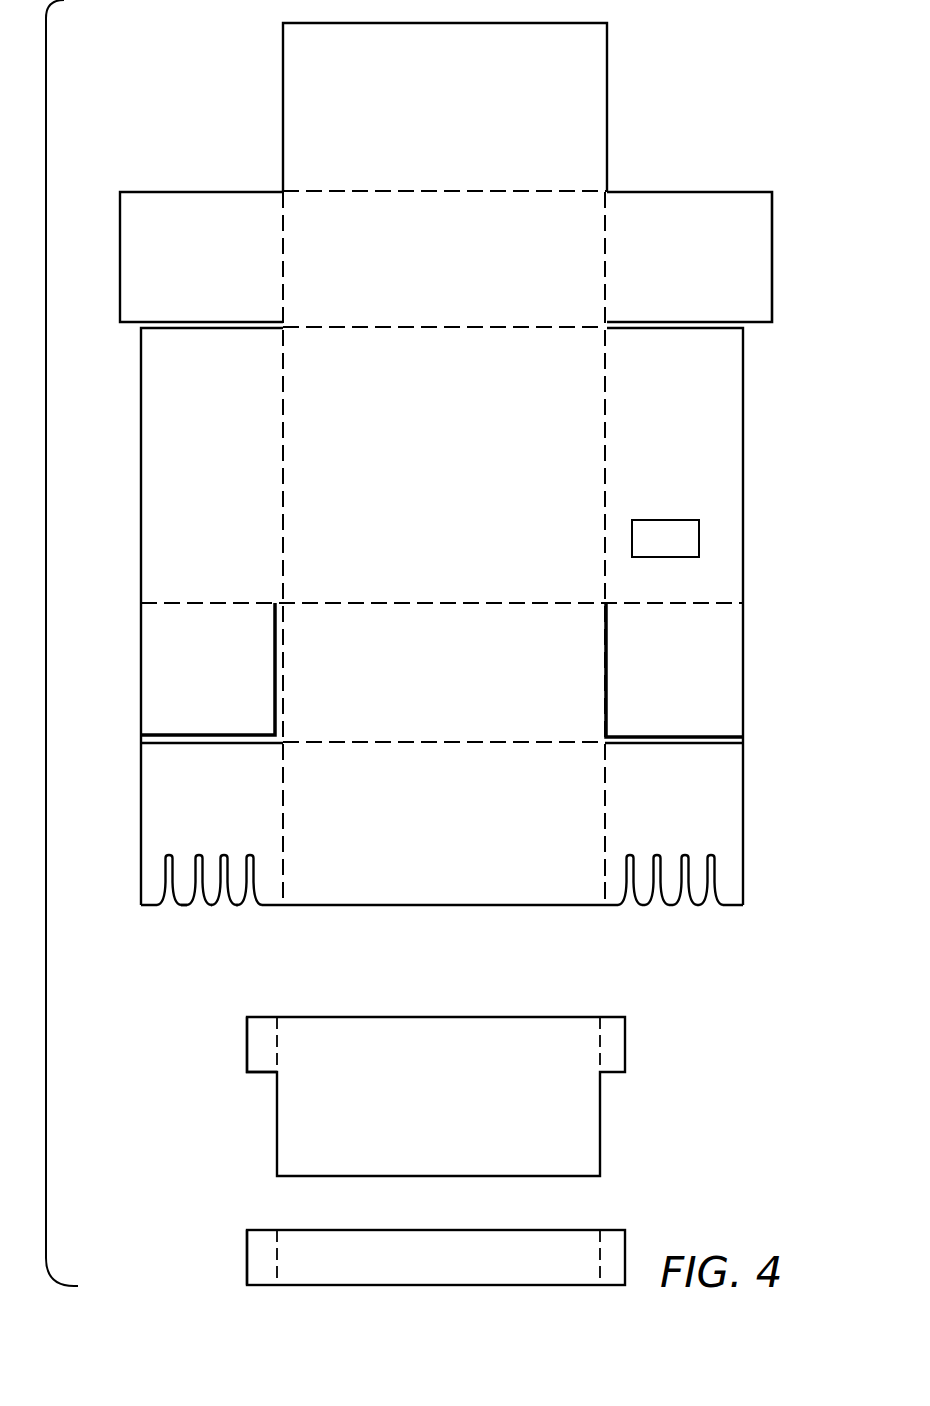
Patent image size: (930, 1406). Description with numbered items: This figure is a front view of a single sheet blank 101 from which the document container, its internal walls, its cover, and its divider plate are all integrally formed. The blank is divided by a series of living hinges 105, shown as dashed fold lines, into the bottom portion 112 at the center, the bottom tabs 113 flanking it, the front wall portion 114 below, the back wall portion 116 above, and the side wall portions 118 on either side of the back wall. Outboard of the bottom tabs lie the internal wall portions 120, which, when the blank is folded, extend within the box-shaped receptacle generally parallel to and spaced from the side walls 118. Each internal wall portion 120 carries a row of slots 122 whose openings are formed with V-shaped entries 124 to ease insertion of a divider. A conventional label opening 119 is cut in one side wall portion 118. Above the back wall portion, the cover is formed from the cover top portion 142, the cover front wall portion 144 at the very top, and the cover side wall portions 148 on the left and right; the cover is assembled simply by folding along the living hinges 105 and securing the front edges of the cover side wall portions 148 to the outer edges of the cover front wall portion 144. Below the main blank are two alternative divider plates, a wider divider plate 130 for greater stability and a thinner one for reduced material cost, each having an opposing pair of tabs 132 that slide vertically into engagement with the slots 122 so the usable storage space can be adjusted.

The single sheet blank 101 is at (690, 92).
The living hinges 105 is at (601, 878).
The bottom portion 112 is at (466, 678).
The bottom tabs 113 is at (218, 678).
The front wall portion 114 is at (466, 818).
The back wall portion 116 is at (466, 481).
The side wall portion 118 is at (222, 481).
The label opening 119 is at (692, 543).
The internal wall portions 120 is at (226, 818).
The slots 122 is at (198, 878).
The V-shaped entries 124 is at (250, 909).
The divider plate 130 is at (472, 1114).
The tabs 132 is at (247, 1041).
The cover top portion 142 is at (477, 269).
The cover front wall portion 144 is at (471, 114).
The cover side wall portions 148 is at (214, 269).